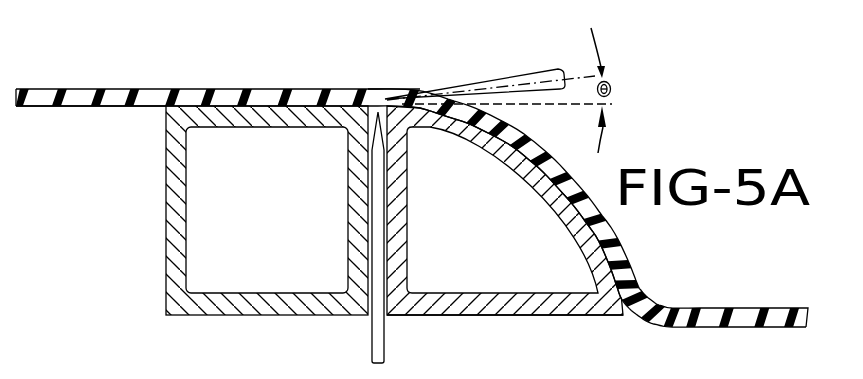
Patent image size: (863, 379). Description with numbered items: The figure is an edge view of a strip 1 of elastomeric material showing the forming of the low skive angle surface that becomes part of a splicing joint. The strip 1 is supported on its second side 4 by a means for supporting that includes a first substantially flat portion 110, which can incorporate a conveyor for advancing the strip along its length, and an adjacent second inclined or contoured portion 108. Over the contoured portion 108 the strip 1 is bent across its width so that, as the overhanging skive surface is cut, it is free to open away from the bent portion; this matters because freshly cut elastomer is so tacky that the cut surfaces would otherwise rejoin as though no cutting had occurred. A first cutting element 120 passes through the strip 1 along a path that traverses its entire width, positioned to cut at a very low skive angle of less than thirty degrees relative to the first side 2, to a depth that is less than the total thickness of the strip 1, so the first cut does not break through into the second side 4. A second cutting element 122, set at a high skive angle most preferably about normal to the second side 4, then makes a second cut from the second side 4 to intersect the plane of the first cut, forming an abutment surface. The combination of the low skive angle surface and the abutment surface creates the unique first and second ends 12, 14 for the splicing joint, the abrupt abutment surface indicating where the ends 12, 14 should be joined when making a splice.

The strip 1 is at (160, 75).
The first side 2 is at (236, 88).
The second side 4 is at (115, 107).
The first end 12 is at (428, 103).
The second end 14 is at (408, 100).
The contoured portion 108 is at (515, 305).
The first substantially flat portion 110 is at (178, 226).
The first cutting element 120 is at (532, 78).
The second cutting element 122 is at (378, 260).